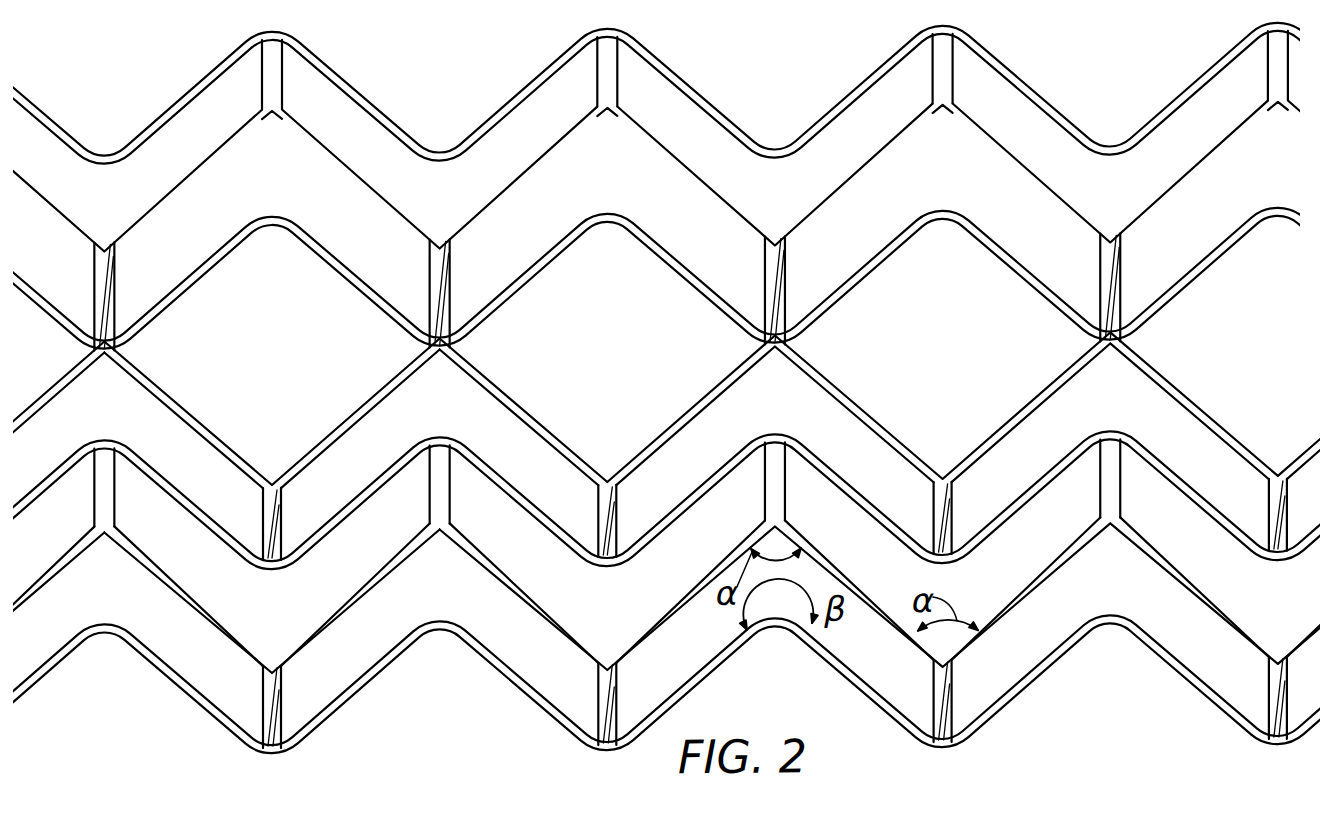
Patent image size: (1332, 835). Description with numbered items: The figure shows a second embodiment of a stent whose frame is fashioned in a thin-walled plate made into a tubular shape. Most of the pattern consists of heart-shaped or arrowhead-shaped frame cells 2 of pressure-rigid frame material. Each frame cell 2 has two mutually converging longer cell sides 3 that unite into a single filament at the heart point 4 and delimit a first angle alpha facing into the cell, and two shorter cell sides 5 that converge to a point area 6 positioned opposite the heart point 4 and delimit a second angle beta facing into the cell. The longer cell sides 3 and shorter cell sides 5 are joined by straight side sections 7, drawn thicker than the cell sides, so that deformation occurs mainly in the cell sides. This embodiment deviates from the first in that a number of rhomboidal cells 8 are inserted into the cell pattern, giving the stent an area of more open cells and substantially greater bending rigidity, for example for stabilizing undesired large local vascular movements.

The frame cell 2 is at (257, 195).
The longer cell sides 3 is at (660, 640).
The heart point 4 is at (610, 670).
The shorter cell sides 5 is at (680, 522).
The point area 6 is at (610, 567).
The side sections 7 is at (622, 512).
The rhomboidal cells 8 is at (256, 357).